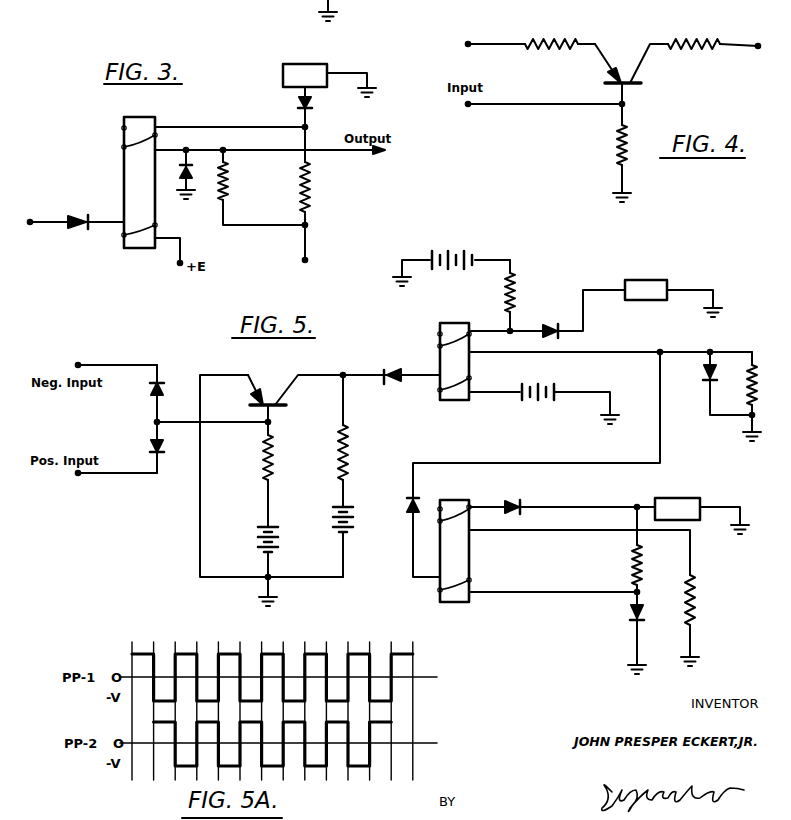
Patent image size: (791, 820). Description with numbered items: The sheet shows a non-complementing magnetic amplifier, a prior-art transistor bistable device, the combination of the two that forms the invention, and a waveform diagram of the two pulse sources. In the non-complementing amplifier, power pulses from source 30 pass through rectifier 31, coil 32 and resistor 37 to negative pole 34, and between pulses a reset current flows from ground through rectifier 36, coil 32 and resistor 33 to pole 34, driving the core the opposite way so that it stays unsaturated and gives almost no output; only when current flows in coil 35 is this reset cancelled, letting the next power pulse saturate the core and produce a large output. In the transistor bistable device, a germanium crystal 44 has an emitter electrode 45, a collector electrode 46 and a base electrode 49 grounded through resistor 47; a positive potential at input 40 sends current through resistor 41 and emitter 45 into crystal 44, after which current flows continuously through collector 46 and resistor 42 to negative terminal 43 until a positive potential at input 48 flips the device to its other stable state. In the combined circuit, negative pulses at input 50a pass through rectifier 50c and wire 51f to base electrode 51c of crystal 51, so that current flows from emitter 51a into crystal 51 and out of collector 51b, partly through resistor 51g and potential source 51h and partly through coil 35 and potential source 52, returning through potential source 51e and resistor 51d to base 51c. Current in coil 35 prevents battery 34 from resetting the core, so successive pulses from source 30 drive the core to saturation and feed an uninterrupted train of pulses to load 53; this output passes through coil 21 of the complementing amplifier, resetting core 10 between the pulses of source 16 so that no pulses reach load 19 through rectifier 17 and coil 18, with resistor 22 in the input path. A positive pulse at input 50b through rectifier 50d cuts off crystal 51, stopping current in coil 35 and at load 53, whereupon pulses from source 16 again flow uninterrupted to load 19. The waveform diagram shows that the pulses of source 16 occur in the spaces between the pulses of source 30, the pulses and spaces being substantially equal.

In FIG. 5, the core 10 is at (470, 555).
In FIG. 5, the source of power pulses PP-1 16 is at (700, 498).
In FIG. 5, the rectifier 17 is at (512, 504).
In FIG. 5, the coil 18 is at (470, 516).
In FIG. 5, the load 19 is at (696, 608).
In FIG. 5, the coil 21 is at (438, 590).
In FIG. 5, the resistor 22 is at (632, 574).
In FIG. 3, the source of power pulses 30 is at (283, 79).
In FIG. 5, the source of power pulses 30 is at (637, 280).
In FIG. 3, the rectifier 31 is at (312, 107).
In FIG. 5, the rectifier 31 is at (550, 328).
In FIG. 3, the coil 32 is at (122, 147).
In FIG. 5, the coil 32 is at (438, 346).
In FIG. 3, the resistor 33 is at (308, 195).
In FIG. 5, the resistor 33 is at (514, 294).
In FIG. 3, the negative pole / battery 34 is at (308, 258).
In FIG. 5, the negative pole / battery 34 is at (442, 250).
In FIG. 3, the coil 35 is at (122, 236).
In FIG. 5, the coil 35 is at (438, 391).
In FIG. 3, the rectifier 36 is at (184, 166).
In FIG. 5, the rectifier 36 is at (704, 375).
In FIG. 3, the resistor 37 is at (224, 192).
In FIG. 4, the input 40 is at (462, 46).
In FIG. 4, the resistor 41 is at (560, 42).
In FIG. 4, the resistor 42 is at (680, 42).
In FIG. 4, the negative terminal 43 is at (757, 48).
In FIG. 4, the germanium crystal 44 is at (643, 86).
In FIG. 4, the emitter electrode 45 is at (608, 78).
In FIG. 4, the collector electrode 46 is at (636, 80).
In FIG. 4, the resistor 47 is at (618, 145).
In FIG. 4, the input 48 is at (469, 108).
In FIG. 4, the base electrode 49 is at (628, 94).
In FIG. 5, the negative input 50a is at (81, 345).
In FIG. 5, the positive input 50b is at (77, 477).
In FIG. 5, the rectifier 50c is at (160, 384).
In FIG. 5, the rectifier 50d is at (150, 452).
In FIG. 5, the crystal 51 is at (286, 407).
In FIG. 5, the emitter electrode 51a is at (254, 394).
In FIG. 5, the collector electrode 51b is at (282, 400).
In FIG. 5, the base electrode 51c is at (271, 414).
In FIG. 5, the resistor 51d is at (274, 473).
In FIG. 5, the potential source 51e is at (258, 547).
In FIG. 5, the wire 51f is at (206, 428).
In FIG. 5, the resistor 51g is at (360, 471).
In FIG. 5, the potential source 51h is at (353, 530).
In FIG. 5, the potential source 52 is at (546, 404).
In FIG. 5, the load 53 is at (758, 388).